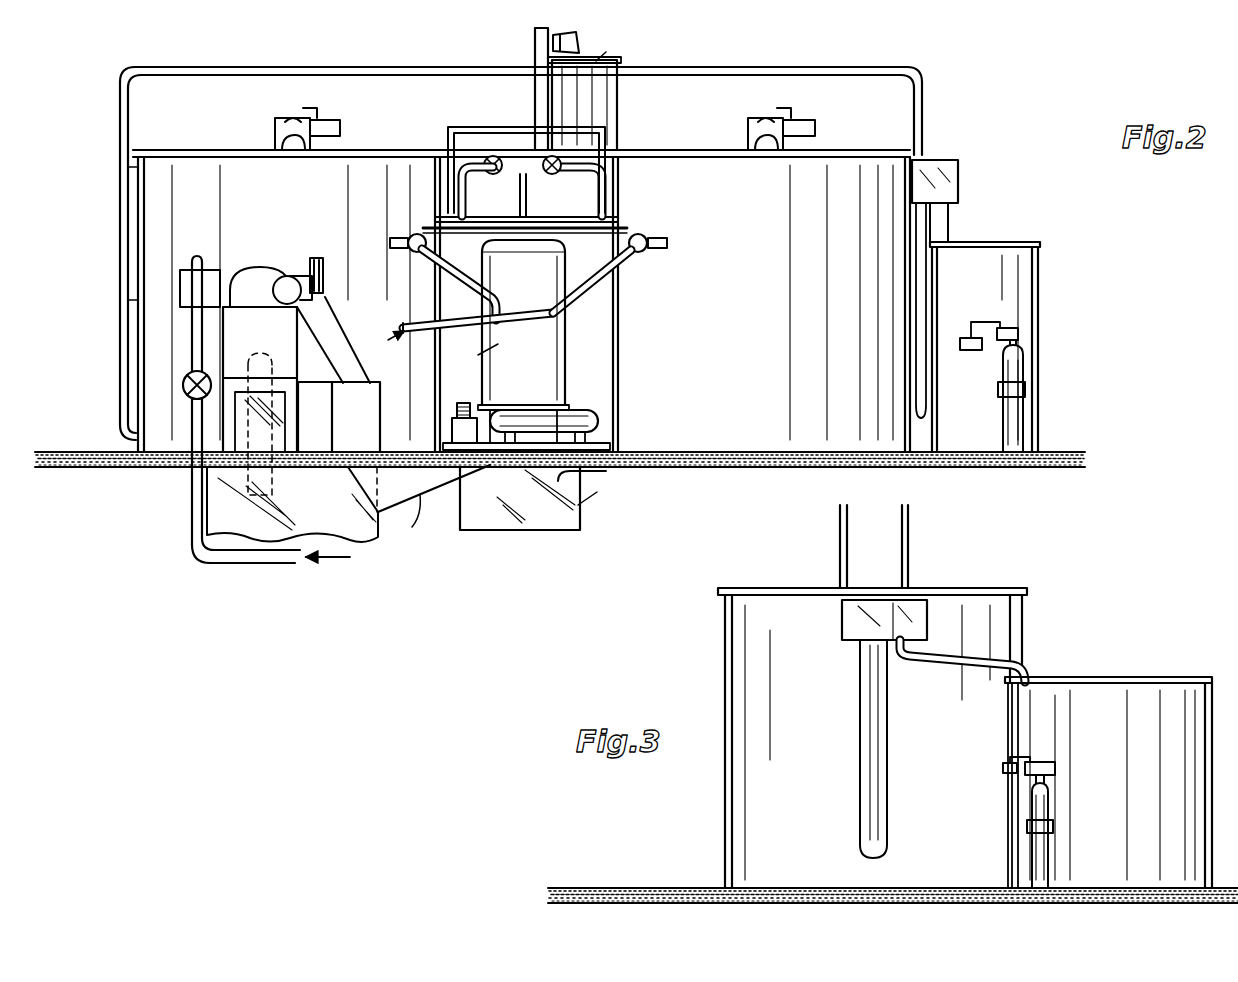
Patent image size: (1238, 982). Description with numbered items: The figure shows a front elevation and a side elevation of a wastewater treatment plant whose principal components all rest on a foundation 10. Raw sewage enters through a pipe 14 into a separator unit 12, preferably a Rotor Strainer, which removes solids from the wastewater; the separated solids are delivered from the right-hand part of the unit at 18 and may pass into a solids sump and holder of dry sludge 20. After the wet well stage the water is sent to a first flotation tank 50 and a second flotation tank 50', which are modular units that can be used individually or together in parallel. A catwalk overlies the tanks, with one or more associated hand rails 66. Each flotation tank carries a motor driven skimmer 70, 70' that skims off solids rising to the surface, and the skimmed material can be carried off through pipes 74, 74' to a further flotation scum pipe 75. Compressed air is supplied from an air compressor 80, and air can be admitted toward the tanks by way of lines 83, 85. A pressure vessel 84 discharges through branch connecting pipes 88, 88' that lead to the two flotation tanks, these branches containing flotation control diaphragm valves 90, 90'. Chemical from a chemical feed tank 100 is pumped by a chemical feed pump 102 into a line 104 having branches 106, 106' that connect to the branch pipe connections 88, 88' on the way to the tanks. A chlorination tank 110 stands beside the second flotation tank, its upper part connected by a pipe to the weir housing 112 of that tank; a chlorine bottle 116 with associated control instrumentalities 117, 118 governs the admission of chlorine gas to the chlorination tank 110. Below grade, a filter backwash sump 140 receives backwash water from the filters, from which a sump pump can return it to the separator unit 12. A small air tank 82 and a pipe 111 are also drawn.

In FIG. 2, the foundation 10 is at (975, 467).
In FIG. 3, the foundation 10 is at (577, 868).
In FIG. 2, the separator unit 12 is at (301, 360).
In FIG. 2, the pipe 14 is at (192, 492).
In FIG. 2, the solids delivery part 18 is at (319, 300).
In FIG. 2, the solids sump and holder of dry sludge 20 is at (363, 418).
In FIG. 2, the first flotation tank 50 is at (521, 301).
In FIG. 2, the second flotation tank 50' is at (826, 304).
In FIG. 3, the second flotation tank 50' is at (897, 738).
In FIG. 2, the hand rail 66 is at (922, 116).
In FIG. 3, the hand rail 66 is at (909, 561).
In FIG. 2, the motor driven skimmer 70 is at (318, 116).
In FIG. 2, the motor driven skimmer 70' is at (796, 115).
In FIG. 2, the pipe 74 is at (439, 277).
In FIG. 2, the pipe 74' is at (611, 273).
In FIG. 2, the flotation scum pipe 75 is at (437, 343).
In FIG. 2, the air compressor 80 is at (464, 446).
In FIG. 2, the air tank 82 is at (567, 417).
In FIG. 2, the line 83 is at (473, 264).
In FIG. 2, the pressure vessel 84 is at (547, 364).
In FIG. 2, the line 85 is at (497, 225).
In FIG. 2, the branch connecting pipe 88 is at (483, 191).
In FIG. 2, the branch connecting pipe 88' is at (609, 191).
In FIG. 2, the flotation control diaphragm valve 90 is at (498, 155).
In FIG. 2, the flotation control diaphragm valve 90' is at (564, 135).
In FIG. 2, the chemical feed tank 100 is at (612, 100).
In FIG. 2, the chemical feed pump 102 is at (578, 40).
In FIG. 2, the line 104 is at (535, 42).
In FIG. 2, the branch 106 is at (526, 154).
In FIG. 2, the branch 106' is at (647, 119).
In FIG. 2, the chlorination tank 110 is at (1041, 308).
In FIG. 3, the chlorination tank 110 is at (1224, 706).
In FIG. 2, the transfer pipe 111 is at (951, 224).
In FIG. 3, the transfer pipe 111 is at (1020, 652).
In FIG. 2, the weir housing 112 is at (961, 193).
In FIG. 3, the weir housing 112 is at (847, 627).
In FIG. 2, the chlorine bottle 116 is at (1016, 422).
In FIG. 3, the chlorine bottle 116 is at (1046, 845).
In FIG. 2, the control instrumentality 117 is at (973, 352).
In FIG. 3, the control instrumentality 117 is at (1004, 771).
In FIG. 2, the control instrumentality 118 is at (1020, 334).
In FIG. 3, the control instrumentality 118 is at (1051, 774).
In FIG. 2, the filter backwash sump 140 is at (491, 532).